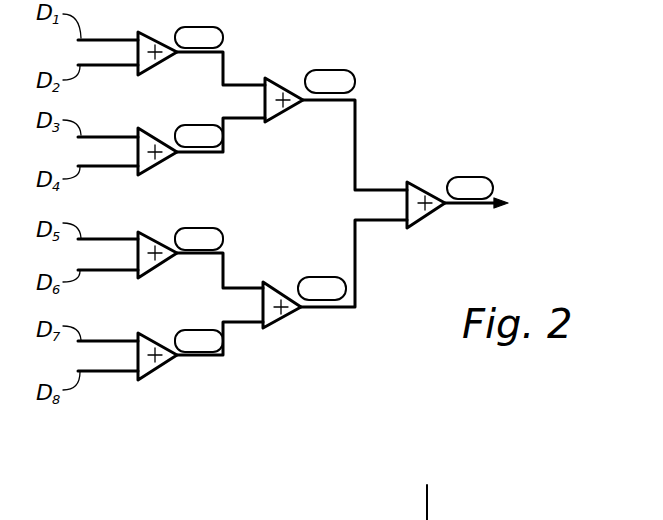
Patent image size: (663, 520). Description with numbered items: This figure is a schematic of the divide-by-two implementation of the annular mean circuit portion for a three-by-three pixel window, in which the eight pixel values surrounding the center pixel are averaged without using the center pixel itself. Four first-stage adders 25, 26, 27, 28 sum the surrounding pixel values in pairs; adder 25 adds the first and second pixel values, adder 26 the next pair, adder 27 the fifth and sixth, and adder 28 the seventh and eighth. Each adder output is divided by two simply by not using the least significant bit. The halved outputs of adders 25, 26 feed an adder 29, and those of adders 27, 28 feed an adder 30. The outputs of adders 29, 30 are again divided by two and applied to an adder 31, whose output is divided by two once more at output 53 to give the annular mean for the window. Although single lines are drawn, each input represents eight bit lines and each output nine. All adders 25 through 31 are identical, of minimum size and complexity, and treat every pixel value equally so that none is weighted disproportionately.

The adder 25 is at (157, 68).
The adder 26 is at (157, 168).
The adder 27 is at (157, 270).
The adder 28 is at (157, 372).
The adder 29 is at (283, 115).
The adder 30 is at (282, 322).
The adder 31 is at (418, 222).
The output 53 is at (480, 205).